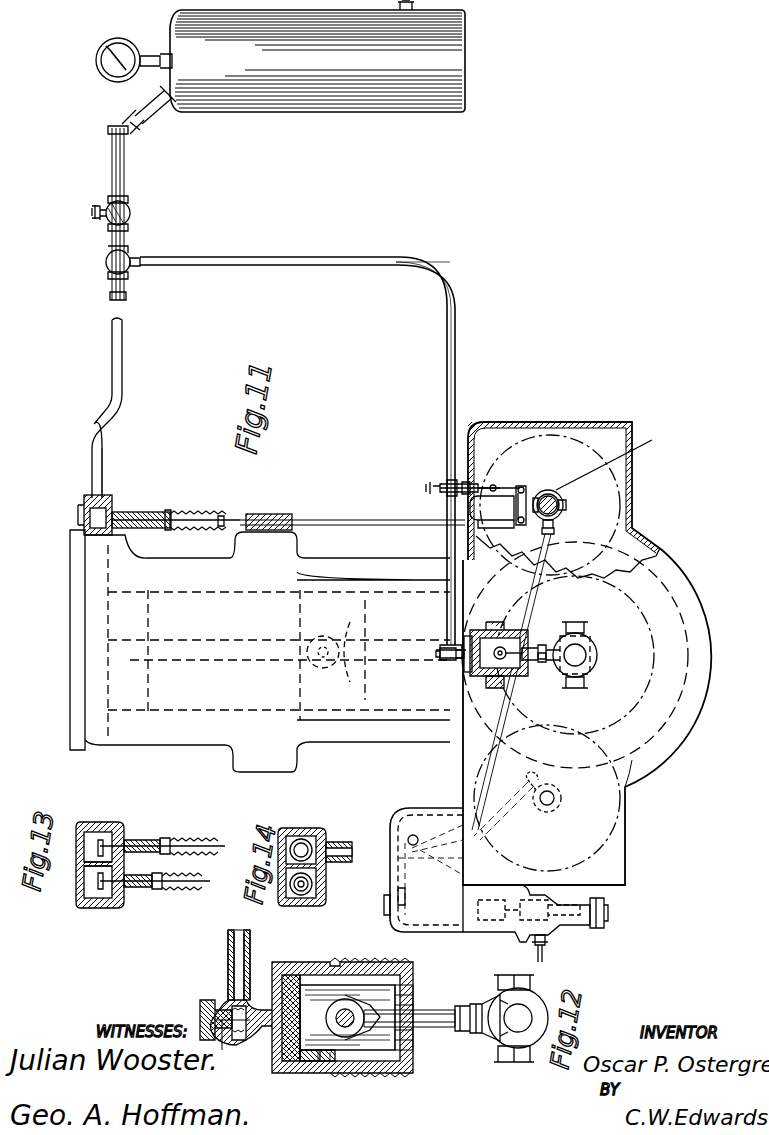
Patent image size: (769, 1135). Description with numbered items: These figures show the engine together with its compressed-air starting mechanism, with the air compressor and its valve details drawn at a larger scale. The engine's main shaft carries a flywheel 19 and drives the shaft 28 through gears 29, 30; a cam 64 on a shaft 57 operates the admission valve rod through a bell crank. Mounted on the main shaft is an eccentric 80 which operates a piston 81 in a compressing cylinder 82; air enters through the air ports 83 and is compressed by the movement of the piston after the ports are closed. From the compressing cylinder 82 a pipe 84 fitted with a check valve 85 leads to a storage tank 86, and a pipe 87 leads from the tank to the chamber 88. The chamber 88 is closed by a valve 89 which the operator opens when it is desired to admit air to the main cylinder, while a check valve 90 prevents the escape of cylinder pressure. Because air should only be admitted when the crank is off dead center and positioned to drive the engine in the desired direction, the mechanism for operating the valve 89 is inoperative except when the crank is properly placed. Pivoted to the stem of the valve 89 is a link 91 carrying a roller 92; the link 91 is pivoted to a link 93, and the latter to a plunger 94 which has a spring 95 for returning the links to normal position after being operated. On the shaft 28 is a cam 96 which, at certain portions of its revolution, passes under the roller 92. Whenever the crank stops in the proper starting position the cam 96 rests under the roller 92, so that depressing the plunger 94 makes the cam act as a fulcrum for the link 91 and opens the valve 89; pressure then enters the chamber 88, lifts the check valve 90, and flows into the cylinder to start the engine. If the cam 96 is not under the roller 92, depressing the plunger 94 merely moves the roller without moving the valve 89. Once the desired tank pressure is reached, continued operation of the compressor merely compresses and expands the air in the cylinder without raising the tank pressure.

In FIG. 11, the flywheel 19 is at (655, 745).
In FIG. 11, the shaft 28 is at (552, 806).
In FIG. 11, the gear 29 is at (600, 455).
In FIG. 11, the gear 30 is at (656, 624).
In FIG. 11, the shaft 57 is at (607, 452).
In FIG. 11, the cam 64 is at (562, 798).
In FIG. 11, the eccentric 80 is at (585, 665).
In FIG. 12, the eccentric 80 is at (500, 1008).
In FIG. 11, the piston 81 is at (478, 640).
In FIG. 12, the piston 81 is at (300, 975).
In FIG. 11, the compressing cylinder 82 is at (490, 670).
In FIG. 12, the compressing cylinder 82 is at (310, 1065).
In FIG. 11, the air ports 83 is at (500, 668).
In FIG. 12, the air ports 83 is at (325, 1068).
In FIG. 11, the pipe 84 is at (452, 290).
In FIG. 12, the pipe 84 is at (236, 930).
In FIG. 12, the check valve 85 is at (238, 1040).
In FIG. 11, the storage tank 86 is at (295, 60).
In FIG. 11, the pipe 87 is at (110, 378).
In FIG. 11, the chamber 88 is at (92, 512).
In FIG. 13, the chamber 88 is at (110, 900).
In FIG. 11, the valve 89 is at (125, 520).
In FIG. 13, the valve 89 is at (88, 840).
In FIG. 14, the valve 89 is at (301, 848).
In FIG. 13, the check valve 90 is at (98, 885).
In FIG. 14, the check valve 90 is at (301, 886).
In FIG. 11, the link 91 is at (520, 500).
In FIG. 11, the roller 92 is at (518, 490).
In FIG. 11, the link 93 is at (493, 486).
In FIG. 11, the plunger 94 is at (462, 482).
In FIG. 11, the spring 95 is at (433, 488).
In FIG. 11, the cam 96 is at (562, 508).